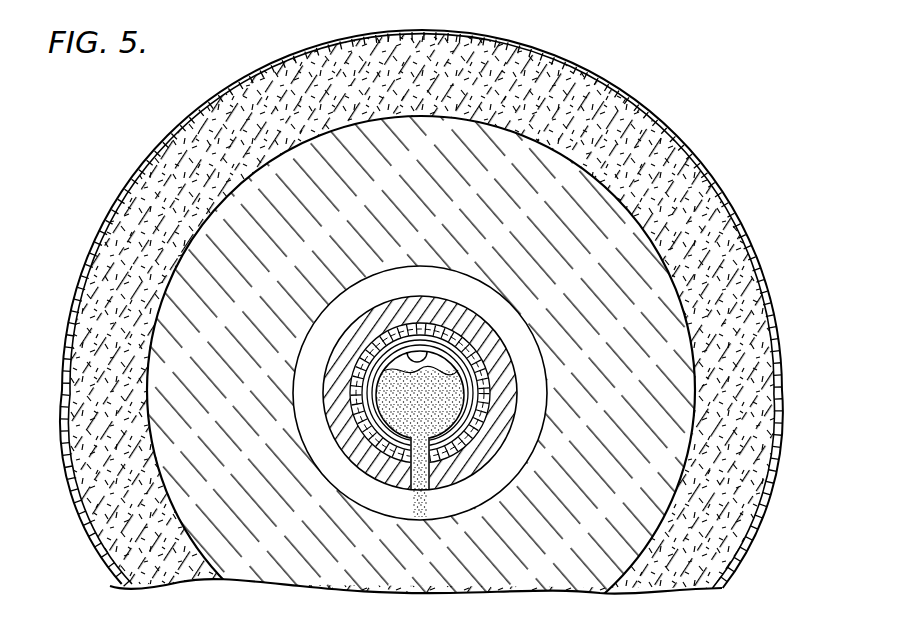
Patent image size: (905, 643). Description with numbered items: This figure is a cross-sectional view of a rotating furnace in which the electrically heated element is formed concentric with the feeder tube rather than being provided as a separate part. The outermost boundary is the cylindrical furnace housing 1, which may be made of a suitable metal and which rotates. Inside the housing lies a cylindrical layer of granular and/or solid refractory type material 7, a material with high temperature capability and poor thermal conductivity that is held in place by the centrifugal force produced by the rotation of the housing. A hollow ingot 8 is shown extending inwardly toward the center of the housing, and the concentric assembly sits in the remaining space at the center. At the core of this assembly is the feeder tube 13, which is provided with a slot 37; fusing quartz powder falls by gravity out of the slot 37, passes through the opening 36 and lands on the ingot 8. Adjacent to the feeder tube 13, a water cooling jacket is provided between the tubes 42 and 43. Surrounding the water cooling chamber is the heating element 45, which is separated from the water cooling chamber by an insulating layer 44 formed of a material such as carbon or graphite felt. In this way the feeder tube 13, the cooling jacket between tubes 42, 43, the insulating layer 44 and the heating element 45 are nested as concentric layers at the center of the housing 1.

The furnace housing 1 is at (780, 305).
The refractory type material 7 is at (736, 380).
The hollow ingot 8 is at (619, 304).
The feeder tube 13 is at (420, 360).
The opening 36 is at (424, 491).
The slot 37 is at (436, 412).
The tube 42 is at (462, 334).
The tube 43 is at (478, 349).
The insulating layer 44 is at (490, 403).
The heating element 45 is at (492, 373).